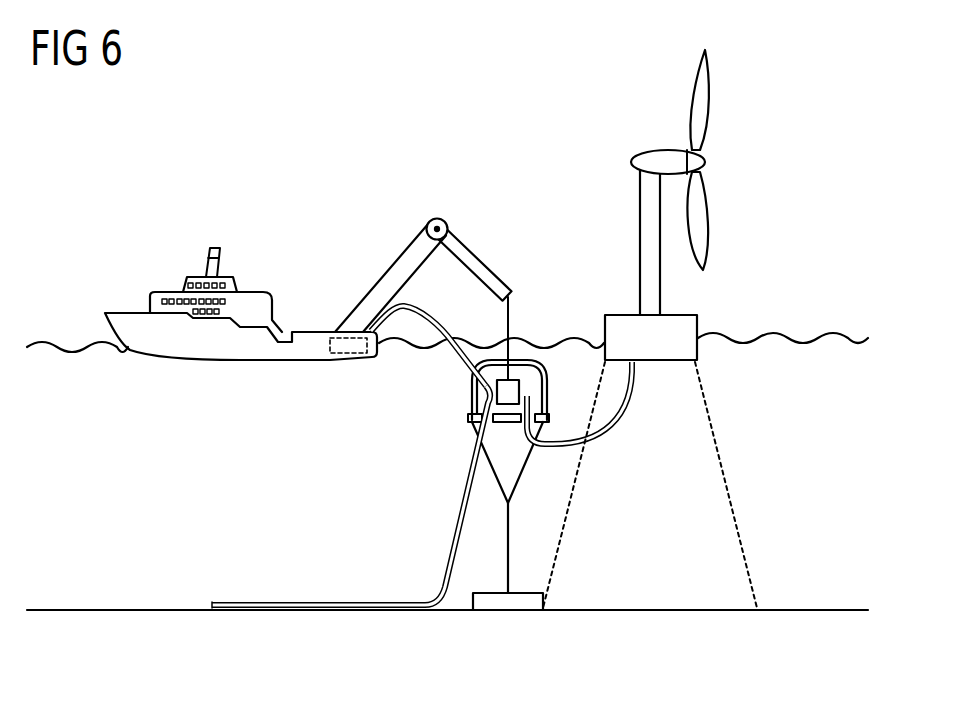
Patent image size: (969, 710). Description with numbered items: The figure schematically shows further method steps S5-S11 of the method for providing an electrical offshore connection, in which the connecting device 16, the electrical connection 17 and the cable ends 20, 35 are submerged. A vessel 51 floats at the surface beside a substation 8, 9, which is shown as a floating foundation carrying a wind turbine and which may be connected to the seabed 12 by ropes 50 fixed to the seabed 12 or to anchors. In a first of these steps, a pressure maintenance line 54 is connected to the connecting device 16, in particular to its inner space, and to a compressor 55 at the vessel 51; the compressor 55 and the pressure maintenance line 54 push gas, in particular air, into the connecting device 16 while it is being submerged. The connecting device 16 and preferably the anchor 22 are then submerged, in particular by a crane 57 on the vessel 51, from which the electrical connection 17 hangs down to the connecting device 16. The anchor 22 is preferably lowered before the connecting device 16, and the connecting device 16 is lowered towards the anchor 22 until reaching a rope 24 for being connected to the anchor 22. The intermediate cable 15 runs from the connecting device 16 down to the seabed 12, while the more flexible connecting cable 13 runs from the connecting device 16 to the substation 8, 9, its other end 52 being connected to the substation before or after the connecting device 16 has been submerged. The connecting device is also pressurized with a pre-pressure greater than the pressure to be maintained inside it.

The substation 8 is at (701, 205).
The substation 9 is at (651, 337).
The seabed 12 is at (657, 612).
The cable 13 is at (618, 436).
The cable 15 is at (457, 486).
The connecting device 16 is at (479, 394).
The electrical connection 17 is at (510, 382).
The end 20 is at (476, 409).
The anchor 22 is at (503, 612).
The rope 24 is at (507, 572).
The end 35 is at (522, 398).
The ropes 50 is at (567, 518).
The vessel 51 is at (241, 335).
The end 52 is at (634, 385).
The pressure maintenance line 54 is at (378, 309).
The compressor 55 is at (348, 352).
The crane 57 is at (468, 258).
The method steps S5-S11 is at (752, 205).